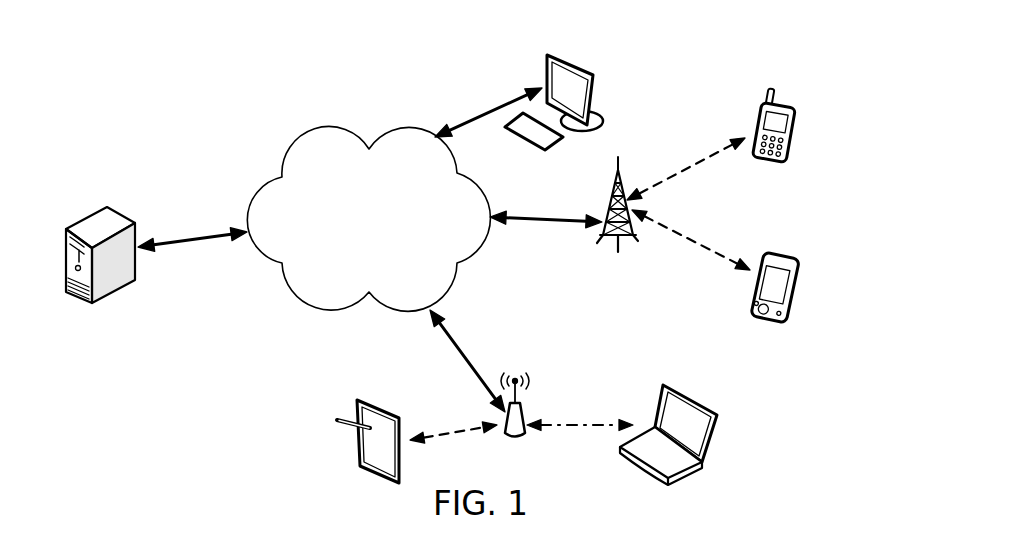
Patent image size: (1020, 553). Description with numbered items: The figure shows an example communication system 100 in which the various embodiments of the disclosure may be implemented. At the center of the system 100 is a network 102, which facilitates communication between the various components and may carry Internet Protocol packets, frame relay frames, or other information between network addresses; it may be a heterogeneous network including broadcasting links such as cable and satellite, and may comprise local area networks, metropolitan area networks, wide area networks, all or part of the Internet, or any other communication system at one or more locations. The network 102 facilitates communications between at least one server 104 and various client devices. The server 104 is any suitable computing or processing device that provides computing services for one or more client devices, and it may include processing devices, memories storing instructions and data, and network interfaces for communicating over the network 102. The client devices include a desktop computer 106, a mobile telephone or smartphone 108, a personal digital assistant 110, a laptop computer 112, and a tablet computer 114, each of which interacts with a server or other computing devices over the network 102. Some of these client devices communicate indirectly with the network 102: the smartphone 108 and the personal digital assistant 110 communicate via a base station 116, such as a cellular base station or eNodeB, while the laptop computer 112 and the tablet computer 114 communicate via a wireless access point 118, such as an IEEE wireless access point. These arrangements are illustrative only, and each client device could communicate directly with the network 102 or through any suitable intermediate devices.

The communication system 100 is at (165, 54).
The network 102 is at (290, 136).
The server 104 is at (78, 222).
The desktop computer 106 is at (547, 65).
The mobile telephone or smartphone 108 is at (792, 108).
The personal digital assistant (PDA) 110 is at (785, 262).
The laptop computer 112 is at (718, 427).
The tablet computer 114 is at (357, 407).
The base station 116 is at (640, 237).
The wireless access point 118 is at (525, 407).